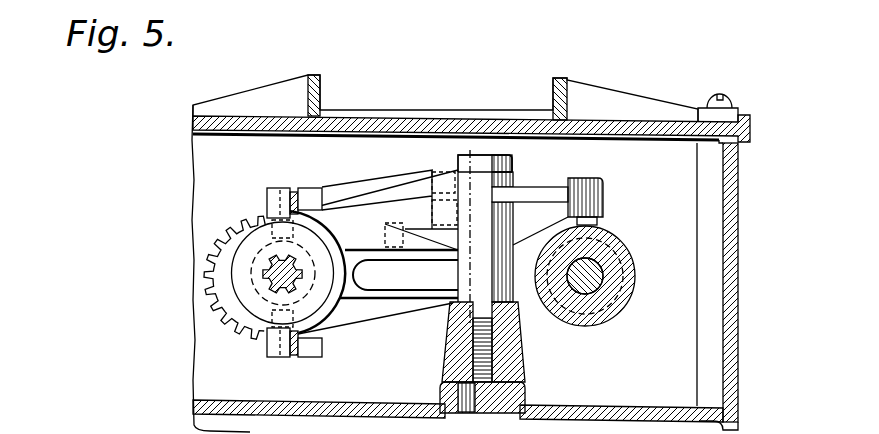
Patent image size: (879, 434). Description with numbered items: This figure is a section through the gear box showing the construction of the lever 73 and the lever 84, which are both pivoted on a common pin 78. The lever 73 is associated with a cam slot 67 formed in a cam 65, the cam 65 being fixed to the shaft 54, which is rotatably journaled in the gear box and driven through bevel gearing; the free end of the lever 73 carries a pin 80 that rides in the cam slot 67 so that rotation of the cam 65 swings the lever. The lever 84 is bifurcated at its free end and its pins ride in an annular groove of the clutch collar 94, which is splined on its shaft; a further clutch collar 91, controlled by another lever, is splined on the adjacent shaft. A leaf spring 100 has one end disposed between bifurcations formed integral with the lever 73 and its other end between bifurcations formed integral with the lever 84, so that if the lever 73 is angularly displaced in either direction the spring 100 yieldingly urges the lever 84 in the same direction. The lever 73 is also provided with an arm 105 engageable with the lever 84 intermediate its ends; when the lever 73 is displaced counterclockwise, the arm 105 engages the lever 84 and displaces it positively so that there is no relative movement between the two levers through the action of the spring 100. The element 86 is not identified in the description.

The clutch collar 94 is at (257, 237).
The upper clamp block 86 is at (281, 200).
The clutch collar 91 is at (275, 290).
The leaf spring 100 is at (362, 170).
The lever 84 is at (402, 307).
The arm 105 is at (385, 223).
The pin 78 is at (468, 160).
The lever 73 is at (547, 184).
The pin 80 is at (595, 223).
The cam slot 67 is at (622, 255).
The shaft 54 is at (596, 276).
The cam 65 is at (622, 297).